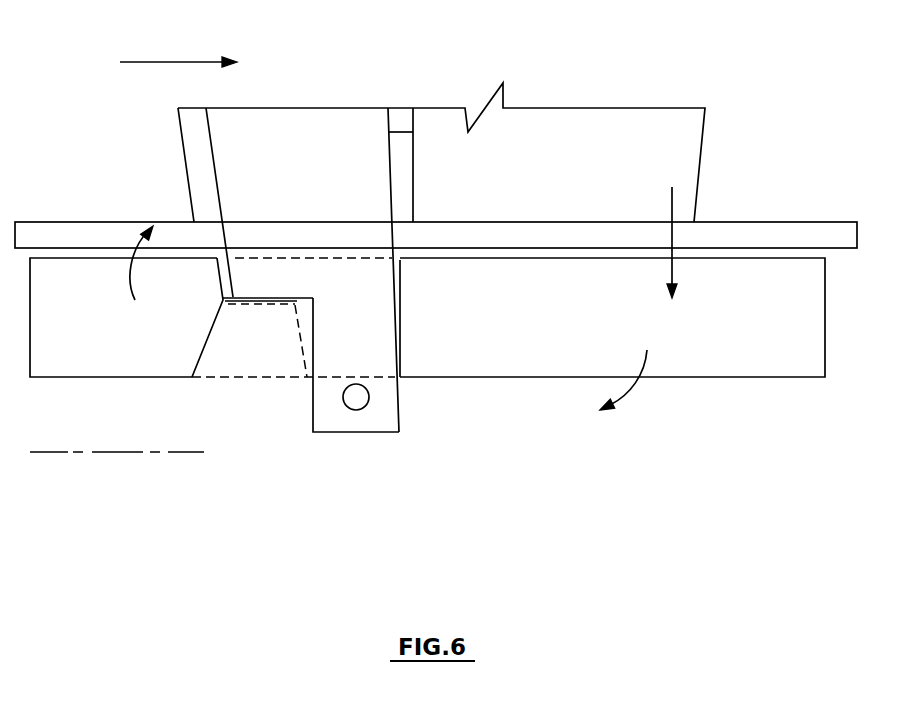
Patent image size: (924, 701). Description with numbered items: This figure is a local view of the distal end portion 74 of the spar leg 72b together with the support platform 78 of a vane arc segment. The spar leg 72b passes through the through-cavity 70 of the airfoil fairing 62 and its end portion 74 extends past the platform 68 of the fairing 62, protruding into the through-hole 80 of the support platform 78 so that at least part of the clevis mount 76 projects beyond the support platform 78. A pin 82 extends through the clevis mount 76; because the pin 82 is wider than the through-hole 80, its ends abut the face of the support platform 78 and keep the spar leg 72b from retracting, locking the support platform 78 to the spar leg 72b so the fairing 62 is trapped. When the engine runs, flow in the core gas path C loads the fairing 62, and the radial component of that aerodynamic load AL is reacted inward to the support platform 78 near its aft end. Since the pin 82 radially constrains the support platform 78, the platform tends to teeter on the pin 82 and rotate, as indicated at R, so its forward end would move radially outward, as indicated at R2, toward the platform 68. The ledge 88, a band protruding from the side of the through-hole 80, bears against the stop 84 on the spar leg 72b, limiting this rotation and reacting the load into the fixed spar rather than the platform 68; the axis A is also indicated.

The airfoil fairing 62 is at (712, 141).
The platform 68 is at (732, 232).
The through-cavity 70 is at (200, 162).
The spar leg 72b is at (415, 130).
The distal end portion 74 is at (364, 210).
The clevis mount 76 is at (412, 397).
The support platform 78 is at (737, 352).
The through-hole 80 is at (400, 300).
The pin 82 is at (356, 410).
The stop 84 is at (267, 303).
The ledge 88 is at (250, 298).
The core gas path C is at (155, 62).
The radial component of aerodynamic load AL is at (672, 202).
The rotation direction R is at (638, 392).
The radially outward rotation of forward end R2 is at (128, 274).
The axis A is at (45, 452).